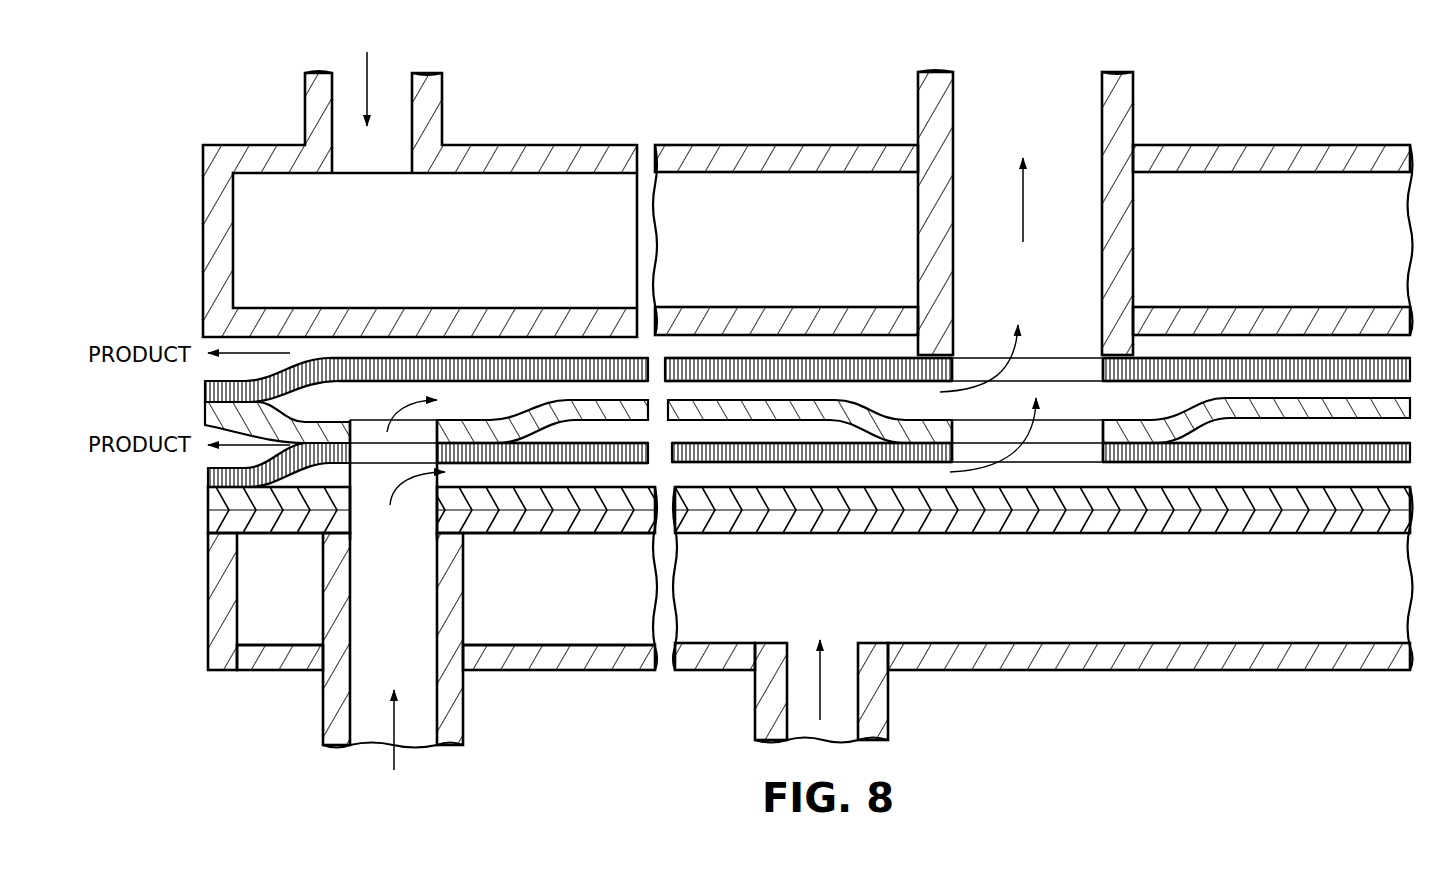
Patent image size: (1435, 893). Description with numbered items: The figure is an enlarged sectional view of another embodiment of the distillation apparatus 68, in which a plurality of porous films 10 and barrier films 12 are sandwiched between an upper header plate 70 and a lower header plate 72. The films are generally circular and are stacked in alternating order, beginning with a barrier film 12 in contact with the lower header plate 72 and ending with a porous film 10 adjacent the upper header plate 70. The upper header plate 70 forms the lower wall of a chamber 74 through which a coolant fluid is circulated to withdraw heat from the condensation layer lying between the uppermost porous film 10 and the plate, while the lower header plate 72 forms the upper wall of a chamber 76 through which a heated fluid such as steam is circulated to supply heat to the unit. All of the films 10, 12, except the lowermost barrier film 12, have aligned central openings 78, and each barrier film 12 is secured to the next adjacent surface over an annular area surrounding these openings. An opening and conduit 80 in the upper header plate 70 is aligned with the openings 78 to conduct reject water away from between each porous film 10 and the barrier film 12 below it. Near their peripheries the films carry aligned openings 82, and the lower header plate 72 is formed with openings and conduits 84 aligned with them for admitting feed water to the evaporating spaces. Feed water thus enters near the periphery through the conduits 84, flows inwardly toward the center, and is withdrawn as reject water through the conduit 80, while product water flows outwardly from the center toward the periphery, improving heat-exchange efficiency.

The porous film 10 is at (218, 381).
The barrier film 12 is at (222, 414).
The distillation apparatus 68 is at (601, 141).
The upper header plate 70 is at (838, 322).
The lower header plate 72 is at (970, 520).
The chamber 74 is at (708, 196).
The chamber 76 is at (789, 595).
The openings 78 is at (958, 366).
The opening and conduit 80 is at (1102, 346).
The openings 82 is at (353, 500).
The openings and conduits 84 is at (436, 551).